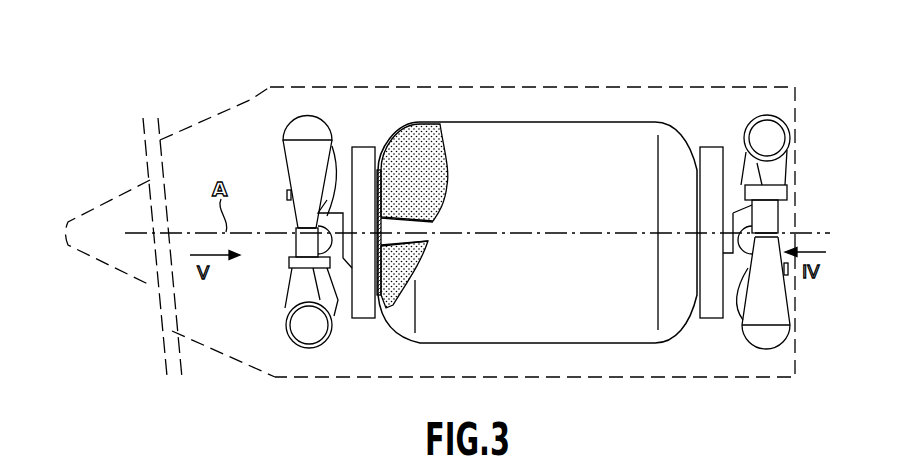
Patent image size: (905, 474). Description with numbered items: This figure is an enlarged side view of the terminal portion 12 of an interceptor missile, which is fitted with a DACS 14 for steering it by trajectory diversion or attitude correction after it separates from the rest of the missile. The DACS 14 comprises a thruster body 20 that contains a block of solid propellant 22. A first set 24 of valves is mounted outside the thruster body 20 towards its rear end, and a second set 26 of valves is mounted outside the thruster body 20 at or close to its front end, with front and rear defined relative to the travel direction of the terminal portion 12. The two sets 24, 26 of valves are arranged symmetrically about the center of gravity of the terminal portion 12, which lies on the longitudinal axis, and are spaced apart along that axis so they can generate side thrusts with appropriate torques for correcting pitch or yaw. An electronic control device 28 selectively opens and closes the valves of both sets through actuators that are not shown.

The terminal portion 12 is at (251, 101).
The DACS 14 is at (503, 91).
The thruster body 20 is at (430, 120).
The block of solid propellant 22 is at (403, 165).
The first set of valves 24 is at (769, 111).
The second set of valves 26 is at (318, 112).
The electronic control device 28 is at (708, 178).